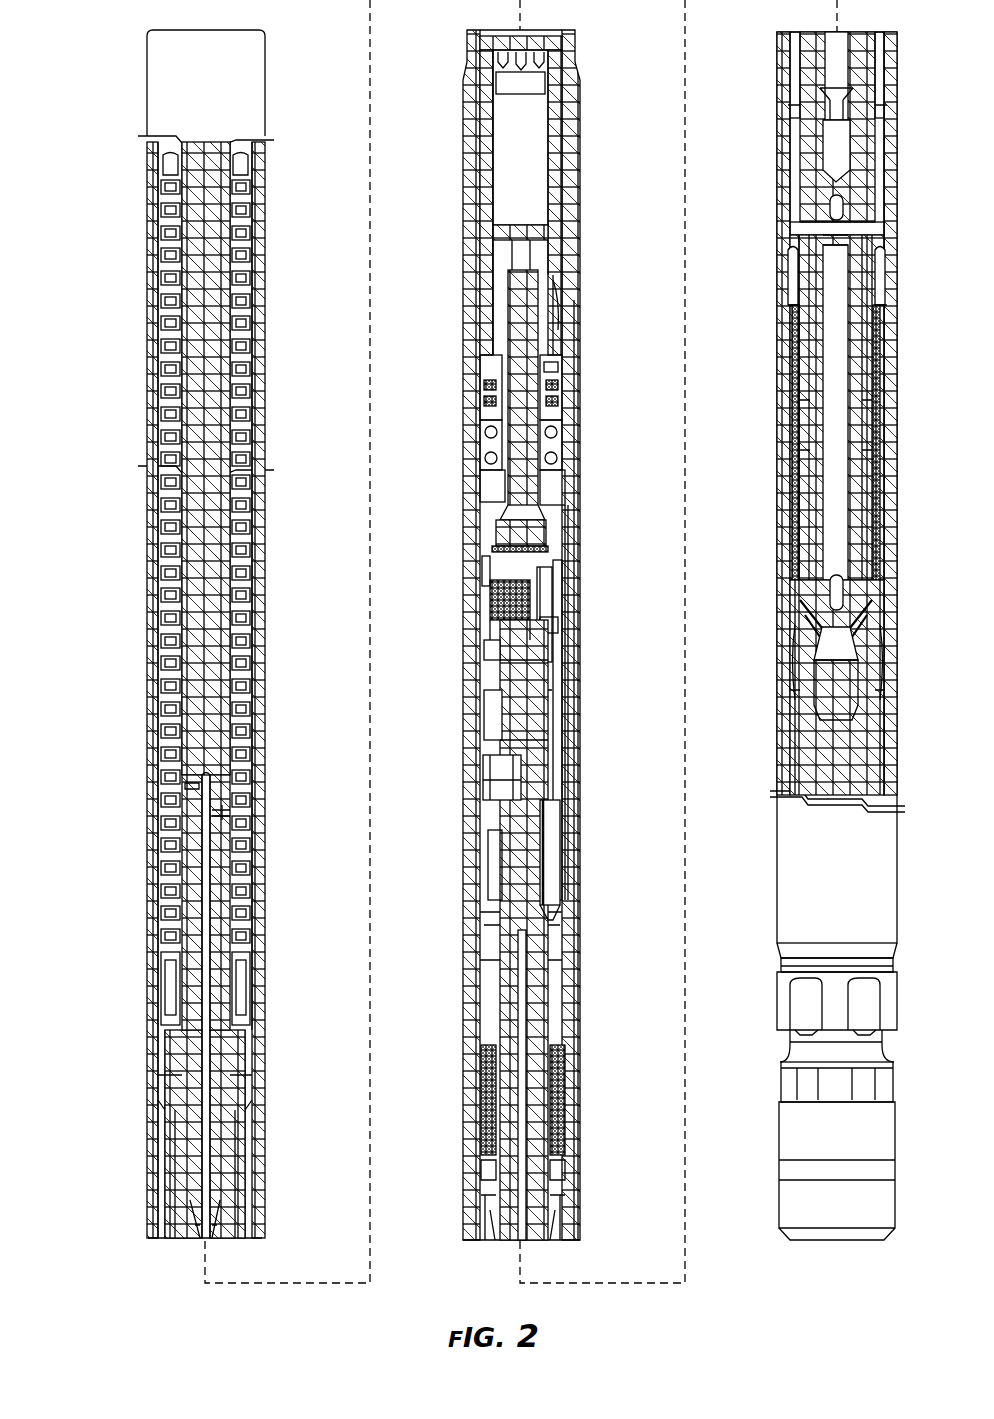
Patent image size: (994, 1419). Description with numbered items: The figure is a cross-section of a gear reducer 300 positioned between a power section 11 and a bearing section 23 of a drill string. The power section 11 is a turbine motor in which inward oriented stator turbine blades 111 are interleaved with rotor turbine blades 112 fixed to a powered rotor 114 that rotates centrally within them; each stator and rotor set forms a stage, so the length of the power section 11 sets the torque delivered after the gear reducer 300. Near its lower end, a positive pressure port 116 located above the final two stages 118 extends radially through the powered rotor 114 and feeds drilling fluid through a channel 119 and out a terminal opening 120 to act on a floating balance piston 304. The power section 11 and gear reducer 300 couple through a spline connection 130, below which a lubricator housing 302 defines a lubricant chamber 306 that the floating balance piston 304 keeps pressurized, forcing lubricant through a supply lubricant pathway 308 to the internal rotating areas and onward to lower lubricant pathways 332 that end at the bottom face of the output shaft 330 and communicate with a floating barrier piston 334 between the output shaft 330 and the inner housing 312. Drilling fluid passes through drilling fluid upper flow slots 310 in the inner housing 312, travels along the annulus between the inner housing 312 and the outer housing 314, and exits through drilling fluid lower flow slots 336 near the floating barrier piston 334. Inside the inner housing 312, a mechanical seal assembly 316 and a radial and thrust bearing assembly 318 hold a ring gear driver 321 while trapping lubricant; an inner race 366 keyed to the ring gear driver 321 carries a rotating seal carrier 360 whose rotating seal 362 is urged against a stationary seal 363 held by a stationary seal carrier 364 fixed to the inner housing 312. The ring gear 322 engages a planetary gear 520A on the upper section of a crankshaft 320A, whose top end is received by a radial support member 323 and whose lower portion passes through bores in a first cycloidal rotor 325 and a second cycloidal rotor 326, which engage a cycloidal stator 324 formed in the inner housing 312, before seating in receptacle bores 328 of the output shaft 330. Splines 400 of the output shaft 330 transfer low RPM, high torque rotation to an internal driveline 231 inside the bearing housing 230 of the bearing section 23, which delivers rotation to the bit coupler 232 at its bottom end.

The power section 11 is at (98, 267).
The stator turbine blades 111 is at (163, 388).
The rotor turbine blades 112 is at (163, 425).
The powered rotor 114 is at (190, 580).
The positive pressure port 116 is at (230, 813).
The final two stages 118 is at (143, 822).
The channel 119 is at (205, 1000).
The terminal opening 120 is at (205, 1240).
The spline connection 130 is at (228, 1152).
The gear reducer 300 is at (443, 250).
The lubricator housing 302 is at (493, 127).
The floating balance piston 304 is at (496, 68).
The lubricant chamber 306 is at (510, 160).
The supply lubricant pathway 308 is at (525, 322).
The drilling fluid upper flow slots 310 is at (558, 313).
The inner housing 312 is at (570, 495).
The outer housing 314 is at (580, 528).
The mechanical seal assembly 316 is at (472, 388).
The radial and thrust bearing assembly 318 is at (472, 436).
The crankshaft 320A is at (548, 628).
The ring gear driver 321 is at (490, 482).
The ring gear 322 is at (495, 582).
The radial support member 323 is at (495, 548).
The cycloidal stator 324 is at (565, 712).
The first cycloidal rotor 325 is at (478, 708).
The second cycloidal rotor 326 is at (485, 770).
The receptacle bores 328 is at (560, 860).
The output shaft 330 is at (490, 835).
The lower lubricant pathways 332 is at (520, 985).
The floating barrier piston 334 is at (480, 1090).
The drilling fluid lower flow slots 336 is at (478, 1188).
The rotating seal carrier 360 is at (562, 363).
The rotating seal 362 is at (562, 373).
The stationary seal 363 is at (562, 392).
The stationary seal carrier 364 is at (562, 403).
The inner race 366 is at (545, 475).
The planetary gear 520A is at (560, 600).
The bearing section 23 is at (762, 251).
The splines 400 is at (810, 73).
The bearing housing 230 is at (778, 742).
The internal driveline 231 is at (796, 663).
The bit coupler 232 is at (780, 1190).